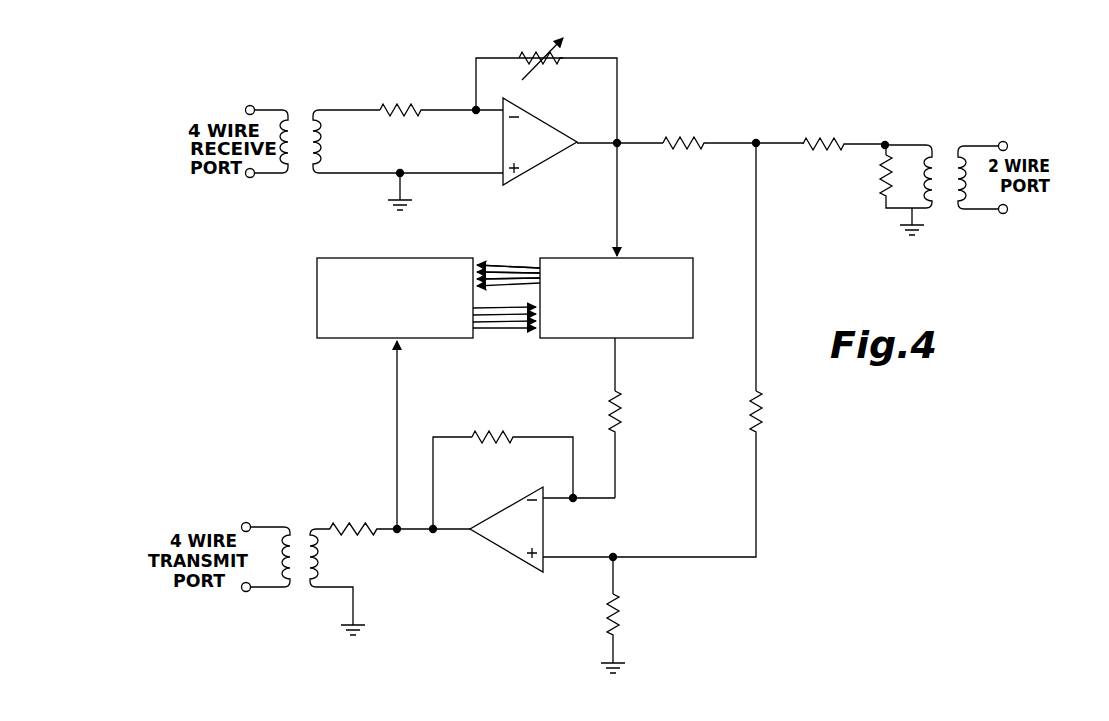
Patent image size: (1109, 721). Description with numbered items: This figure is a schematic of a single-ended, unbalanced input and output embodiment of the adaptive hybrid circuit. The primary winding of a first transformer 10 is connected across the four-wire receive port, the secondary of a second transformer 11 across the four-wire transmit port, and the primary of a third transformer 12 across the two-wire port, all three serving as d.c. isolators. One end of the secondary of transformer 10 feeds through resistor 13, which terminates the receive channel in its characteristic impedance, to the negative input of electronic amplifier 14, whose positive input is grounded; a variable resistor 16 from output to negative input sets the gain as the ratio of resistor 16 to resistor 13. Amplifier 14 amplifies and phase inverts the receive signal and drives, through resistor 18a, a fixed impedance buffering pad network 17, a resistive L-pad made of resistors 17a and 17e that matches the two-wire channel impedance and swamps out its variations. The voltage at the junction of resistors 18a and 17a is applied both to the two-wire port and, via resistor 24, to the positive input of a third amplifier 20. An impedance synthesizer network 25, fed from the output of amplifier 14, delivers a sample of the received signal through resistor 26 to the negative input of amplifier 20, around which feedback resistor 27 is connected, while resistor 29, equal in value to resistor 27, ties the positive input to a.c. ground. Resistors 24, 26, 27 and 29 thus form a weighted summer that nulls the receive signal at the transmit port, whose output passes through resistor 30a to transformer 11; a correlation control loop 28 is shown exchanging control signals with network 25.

The first transformer 10 is at (285, 103).
The second transformer 11 is at (285, 522).
The third transformer 12 is at (930, 137).
The resistor 13 is at (403, 104).
The electronic amplifier 14 is at (514, 152).
The variable resistor 16 is at (538, 52).
The fixed impedance buffering pad network 17 is at (870, 137).
The resistor 17a is at (822, 138).
The resistor 17e is at (883, 166).
The resistor 18a is at (682, 137).
The third amplifier 20 is at (517, 502).
The resistor 24 is at (761, 420).
The impedance synthesizer network 25 is at (626, 257).
The resistor 26 is at (620, 422).
The resistor 27 is at (498, 431).
The correlation control loop 28 is at (317, 320).
The resistor 29 is at (620, 620).
The resistor 30a is at (350, 523).